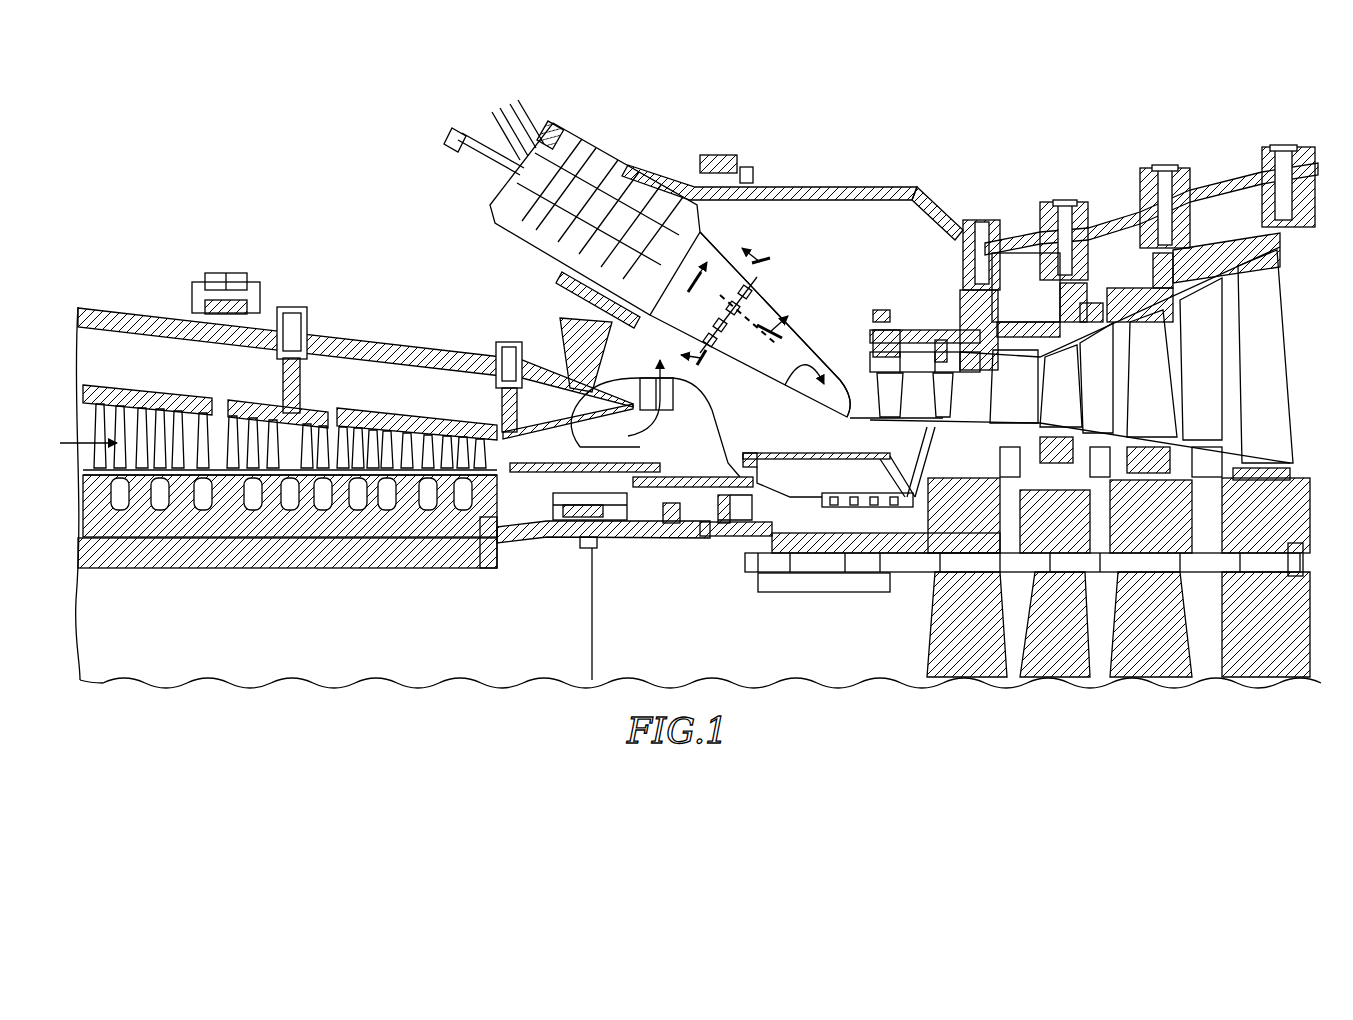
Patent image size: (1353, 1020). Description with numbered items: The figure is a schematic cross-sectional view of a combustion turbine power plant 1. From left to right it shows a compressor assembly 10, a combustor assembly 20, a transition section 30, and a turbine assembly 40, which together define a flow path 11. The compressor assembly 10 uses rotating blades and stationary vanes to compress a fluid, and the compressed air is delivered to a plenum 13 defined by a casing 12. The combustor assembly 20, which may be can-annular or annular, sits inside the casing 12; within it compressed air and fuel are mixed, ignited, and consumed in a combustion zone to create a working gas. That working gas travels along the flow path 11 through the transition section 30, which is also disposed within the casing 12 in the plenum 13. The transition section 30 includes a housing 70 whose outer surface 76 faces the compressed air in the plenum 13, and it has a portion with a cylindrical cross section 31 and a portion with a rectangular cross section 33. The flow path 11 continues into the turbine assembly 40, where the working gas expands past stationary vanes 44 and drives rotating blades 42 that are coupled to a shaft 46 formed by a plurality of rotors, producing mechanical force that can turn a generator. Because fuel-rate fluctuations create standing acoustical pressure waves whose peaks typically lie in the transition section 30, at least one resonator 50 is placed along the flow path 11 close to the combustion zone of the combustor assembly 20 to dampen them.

The combustion turbine power plant 1 is at (298, 182).
The compressor assembly 10 is at (380, 343).
The flow path 11 is at (80, 438).
The casing 12 is at (843, 188).
The plenum 13 is at (919, 236).
The combustor assembly 20 is at (637, 164).
The transition section 30 is at (848, 375).
The portion with cylindrical cross section 31 is at (764, 301).
The portion with rectangular cross section 33 is at (848, 383).
The turbine assembly 40 is at (1098, 215).
The rotating blades 42 is at (1156, 390).
The stationary vanes 44 is at (1093, 374).
The shaft 46 is at (1300, 592).
The resonator 50 is at (729, 299).
The housing 70 is at (798, 411).
The outer surface 76 is at (840, 413).